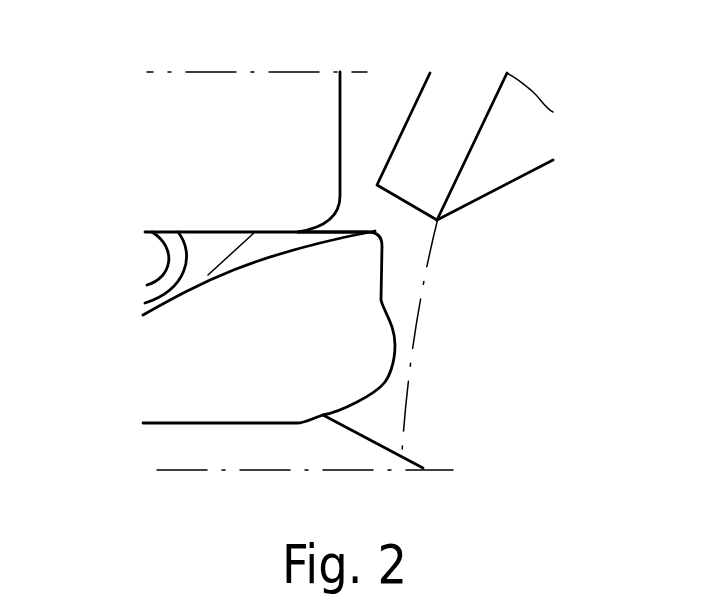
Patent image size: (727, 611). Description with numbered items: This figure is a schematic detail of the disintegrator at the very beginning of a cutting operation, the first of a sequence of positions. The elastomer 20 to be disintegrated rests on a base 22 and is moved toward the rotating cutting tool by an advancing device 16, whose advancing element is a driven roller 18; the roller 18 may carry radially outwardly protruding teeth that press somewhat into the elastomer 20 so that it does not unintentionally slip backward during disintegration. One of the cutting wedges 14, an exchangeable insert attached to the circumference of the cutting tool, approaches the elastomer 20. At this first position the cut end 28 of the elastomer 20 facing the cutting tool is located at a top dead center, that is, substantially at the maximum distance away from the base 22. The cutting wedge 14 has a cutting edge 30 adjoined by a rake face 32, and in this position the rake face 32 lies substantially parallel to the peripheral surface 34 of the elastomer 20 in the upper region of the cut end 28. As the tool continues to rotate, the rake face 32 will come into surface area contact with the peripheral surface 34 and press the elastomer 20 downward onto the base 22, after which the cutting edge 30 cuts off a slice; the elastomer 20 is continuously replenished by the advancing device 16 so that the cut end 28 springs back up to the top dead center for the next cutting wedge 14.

The cutting wedge 14 is at (510, 117).
The advancing device 16 is at (183, 142).
The driven roller 18 is at (198, 258).
The elastomer 20 is at (200, 365).
The base 22 is at (283, 443).
The cut end 28 is at (393, 293).
The cutting edge 30 is at (390, 203).
The rake face 32 is at (488, 197).
The peripheral surface 34 is at (308, 287).